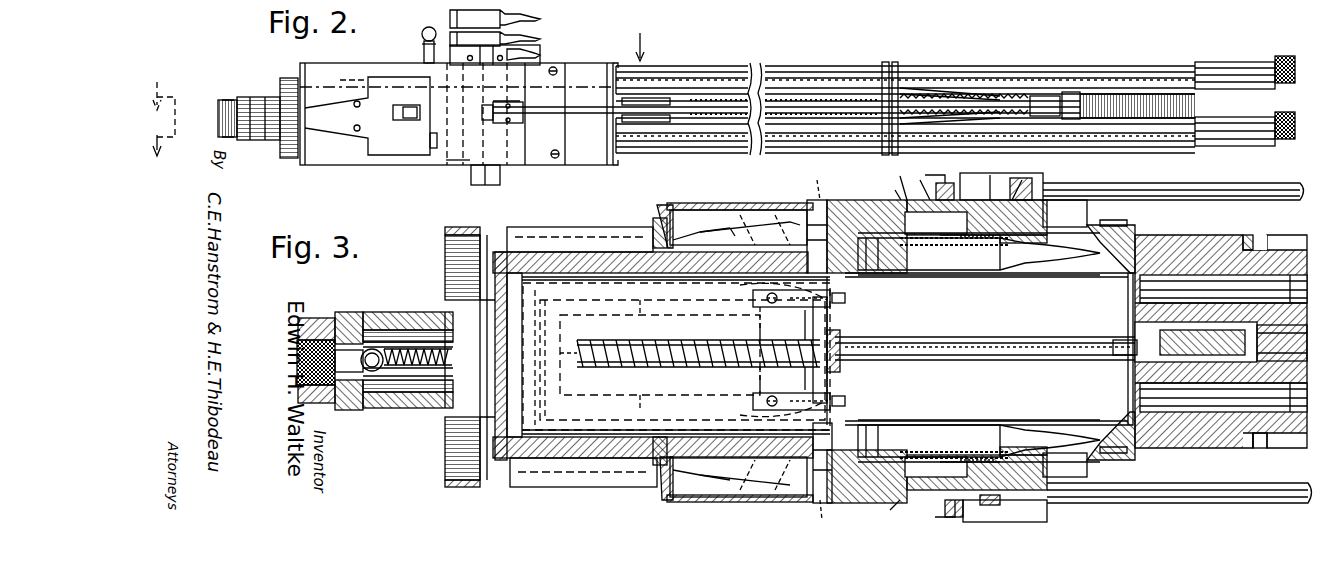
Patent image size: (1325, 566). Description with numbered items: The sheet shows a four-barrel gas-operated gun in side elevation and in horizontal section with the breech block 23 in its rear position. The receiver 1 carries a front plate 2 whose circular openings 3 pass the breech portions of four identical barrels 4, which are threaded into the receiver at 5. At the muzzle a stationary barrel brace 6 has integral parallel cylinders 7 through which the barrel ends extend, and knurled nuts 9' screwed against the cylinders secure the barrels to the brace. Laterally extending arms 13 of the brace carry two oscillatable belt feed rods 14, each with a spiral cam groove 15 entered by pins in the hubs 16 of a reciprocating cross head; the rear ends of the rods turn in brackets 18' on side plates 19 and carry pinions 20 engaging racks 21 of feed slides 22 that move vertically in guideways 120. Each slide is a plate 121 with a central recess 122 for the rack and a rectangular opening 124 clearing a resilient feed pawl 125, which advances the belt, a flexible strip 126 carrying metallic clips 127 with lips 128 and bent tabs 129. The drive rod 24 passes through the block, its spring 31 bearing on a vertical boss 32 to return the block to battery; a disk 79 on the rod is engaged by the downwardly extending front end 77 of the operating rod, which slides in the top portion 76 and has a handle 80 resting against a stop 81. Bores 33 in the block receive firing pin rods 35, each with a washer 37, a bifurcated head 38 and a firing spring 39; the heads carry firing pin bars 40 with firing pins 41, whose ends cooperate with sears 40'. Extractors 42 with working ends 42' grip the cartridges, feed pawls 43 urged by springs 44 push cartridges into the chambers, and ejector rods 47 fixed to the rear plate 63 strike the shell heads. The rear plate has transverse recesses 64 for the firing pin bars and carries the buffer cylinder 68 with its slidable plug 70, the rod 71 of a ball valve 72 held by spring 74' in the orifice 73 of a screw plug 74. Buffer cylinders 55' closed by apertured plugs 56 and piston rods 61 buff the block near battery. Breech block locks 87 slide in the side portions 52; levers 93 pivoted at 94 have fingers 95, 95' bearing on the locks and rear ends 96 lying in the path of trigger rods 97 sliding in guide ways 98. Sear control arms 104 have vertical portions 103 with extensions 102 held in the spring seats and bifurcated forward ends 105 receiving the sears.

In FIG. 2, the receiver 1 is at (330, 63).
In FIG. 3, the receiver 1 is at (1218, 235).
In FIG. 2, the front plate 2 is at (619, 63).
In FIG. 3, the front plate 2 is at (1248, 448).
In FIG. 2, the circular openings 3 is at (397, 75).
In FIG. 3, the circular openings 3 is at (1248, 235).
In FIG. 2, the barrels 4 is at (1125, 141).
In FIG. 3, the barrels 4 is at (1288, 250).
In FIG. 3, the threaded connection 5 is at (1160, 252).
In FIG. 2, the barrel-brace 6 is at (1137, 104).
In FIG. 2, the cylinders 7 is at (1225, 62).
In FIG. 2, the knurled nuts 9' is at (1285, 95).
In FIG. 2, the laterally extending arms 13 is at (1067, 92).
In FIG. 2, the belt-feed-rods 14 is at (595, 113).
In FIG. 3, the belt-feed-rods 14 is at (1170, 190).
In FIG. 2, the spiral cam groove 15 is at (990, 112).
In FIG. 2, the hubs 16 is at (1040, 96).
In FIG. 2, the brackets 18' is at (524, 104).
In FIG. 3, the brackets 18' is at (1019, 348).
In FIG. 2, the side plates 19 is at (447, 160).
In FIG. 3, the side plates 19 is at (668, 210).
In FIG. 2, the pinion 20 is at (480, 120).
In FIG. 3, the pinion 20 is at (940, 340).
In FIG. 2, the racks 21 is at (463, 114).
In FIG. 3, the racks 21 is at (935, 205).
In FIG. 2, the feed slides 22 is at (503, 32).
In FIG. 3, the feed slides 22 is at (862, 505).
In FIG. 3, the breech block 23 is at (842, 326).
In FIG. 3, the breech block drive-rod 24 is at (995, 343).
In FIG. 2, the spiral spring 31 is at (937, 90).
In FIG. 2, the vertical boss 32 is at (660, 96).
In FIG. 3, the vertical boss 32 is at (1282, 343).
In FIG. 3, the bore 33 is at (606, 345).
In FIG. 3, the firing-pin rod 35 is at (607, 367).
In FIG. 3, the washer 37 is at (820, 367).
In FIG. 3, the bifurcated head 38 is at (553, 345).
In FIG. 3, the spiral firing spring 39 is at (704, 367).
In FIG. 3, the firing pin bar 40 is at (553, 357).
In FIG. 3, the sears 40' is at (867, 344).
In FIG. 3, the firing pins 41 is at (652, 318).
In FIG. 3, the extractors 42 is at (810, 350).
In FIG. 3, the working ends 42' is at (868, 344).
In FIG. 3, the cartridge feed pawls 43 is at (832, 287).
In FIG. 3, the springs 44 is at (775, 350).
In FIG. 3, the ejector rods 47 is at (848, 297).
In FIG. 3, the side portions 52 is at (580, 255).
In FIG. 2, the buffer cylinders 55' is at (763, 99).
In FIG. 2, the centrally apertured plugs 56 is at (893, 62).
In FIG. 3, the piston rods 61 is at (1125, 355).
In FIG. 2, the rear plate 63 is at (291, 158).
In FIG. 3, the rear plate 63 is at (501, 460).
In FIG. 3, the transverse recesses 64 is at (515, 273).
In FIG. 2, the buffer cylinder 68 is at (264, 140).
In FIG. 3, the buffer cylinder 68 is at (405, 408).
In FIG. 3, the buffer plug 70 is at (436, 366).
In FIG. 3, the rod 71 is at (396, 320).
In FIG. 3, the ball valve 72 is at (380, 366).
In FIG. 3, the orifice 73 is at (350, 312).
In FIG. 2, the screw plug 74 is at (222, 106).
In FIG. 3, the screw plug 74 is at (316, 381).
In FIG. 3, the spring 74' is at (435, 348).
In FIG. 2, the top portion 76 is at (368, 63).
In FIG. 3, the front end 77 is at (1180, 365).
In FIG. 3, the disk 79 is at (840, 366).
In FIG. 2, the handle 80 is at (426, 34).
In FIG. 2, the stop 81 is at (422, 40).
In FIG. 3, the breech-block locks 87 is at (735, 318).
In FIG. 2, the levers 93 is at (409, 105).
In FIG. 3, the levers 93 is at (751, 215).
In FIG. 3, the pivot 94 is at (728, 228).
In FIG. 3, the fingers 95 is at (812, 469).
In FIG. 3, the trigger bar end 95' is at (811, 226).
In FIG. 3, the rear ends 96 is at (657, 218).
In FIG. 2, the trigger rods 97 is at (306, 104).
In FIG. 3, the trigger rods 97 is at (488, 235).
In FIG. 3, the guide ways 98 is at (548, 227).
In FIG. 3, the extensions 102 is at (686, 225).
In FIG. 3, the vertical portions 103 is at (710, 225).
In FIG. 3, the sear control arms 104 is at (778, 215).
In FIG. 3, the forward ends 105 is at (829, 342).
In FIG. 3, the guideways 120 is at (1043, 212).
In FIG. 3, the plate 121 is at (884, 212).
In FIG. 3, the central vertical recess 122 is at (893, 512).
In FIG. 3, the rectangular opening 124 is at (1012, 200).
In FIG. 3, the feed pawl 125 is at (1020, 200).
In FIG. 2, the strip 126 is at (500, 176).
In FIG. 3, the strip 126 is at (990, 250).
In FIG. 3, the clips 127 is at (945, 245).
In FIG. 3, the lips 128 is at (910, 245).
In FIG. 3, the tabs 129 is at (965, 247).